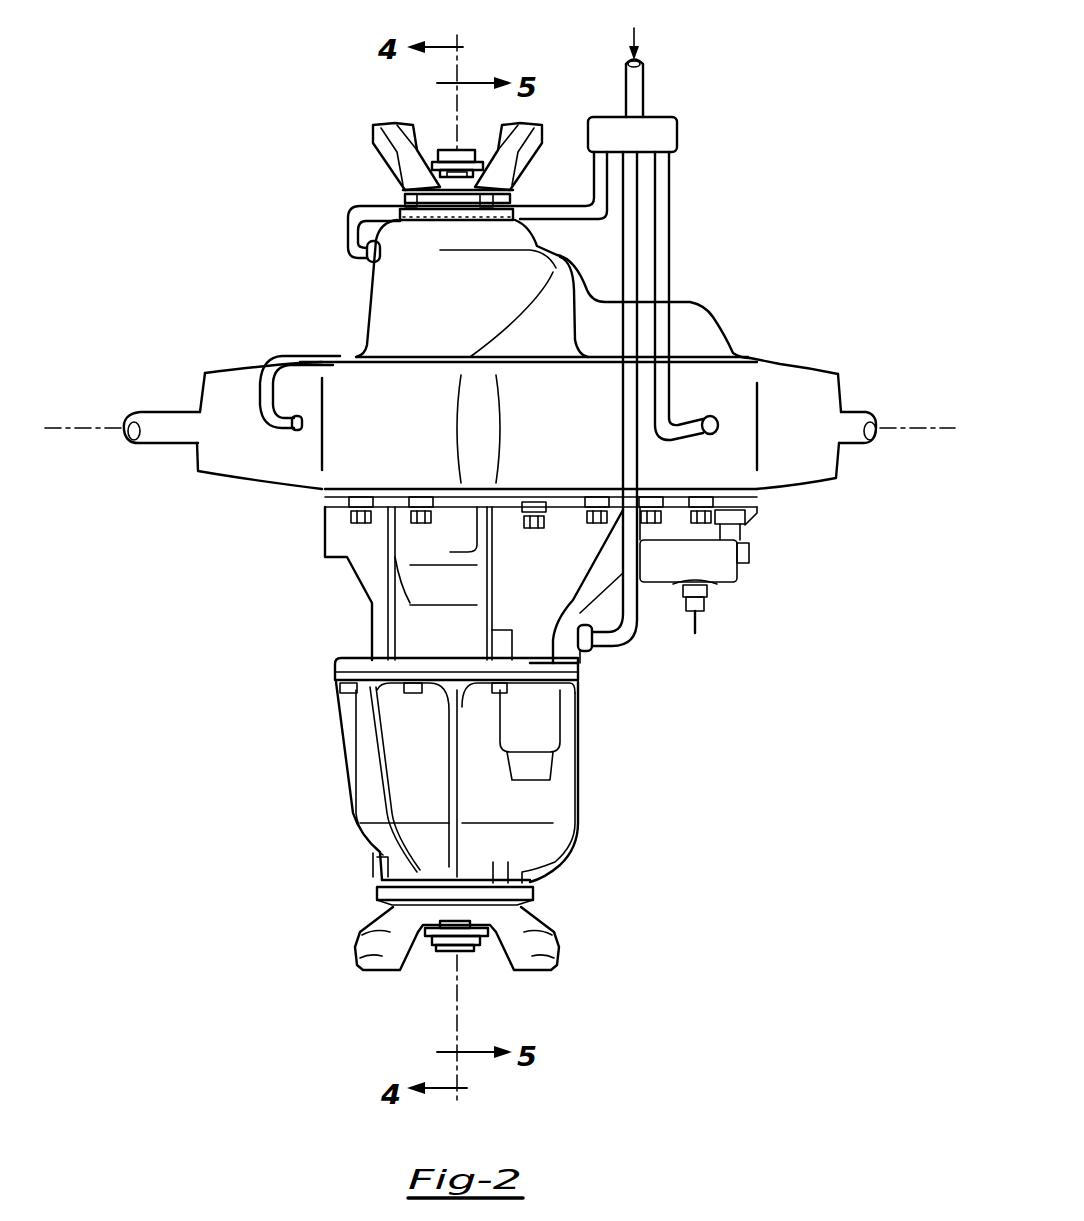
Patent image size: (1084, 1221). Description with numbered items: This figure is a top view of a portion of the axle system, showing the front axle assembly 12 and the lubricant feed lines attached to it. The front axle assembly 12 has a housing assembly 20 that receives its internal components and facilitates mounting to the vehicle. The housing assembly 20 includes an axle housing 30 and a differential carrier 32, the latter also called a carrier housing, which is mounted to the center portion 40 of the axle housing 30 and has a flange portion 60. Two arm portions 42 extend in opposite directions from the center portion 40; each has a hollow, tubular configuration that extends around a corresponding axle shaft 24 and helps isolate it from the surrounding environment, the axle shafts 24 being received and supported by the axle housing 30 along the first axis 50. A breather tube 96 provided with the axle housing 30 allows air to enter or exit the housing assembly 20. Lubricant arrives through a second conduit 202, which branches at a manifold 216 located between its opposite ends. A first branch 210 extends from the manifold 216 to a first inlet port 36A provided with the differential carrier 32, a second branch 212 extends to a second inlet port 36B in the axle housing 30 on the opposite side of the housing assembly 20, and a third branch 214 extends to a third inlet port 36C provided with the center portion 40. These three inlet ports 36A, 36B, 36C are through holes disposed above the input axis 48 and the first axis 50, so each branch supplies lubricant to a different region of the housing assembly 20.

The front axle assembly 12 is at (203, 255).
The housing assembly 20 is at (243, 355).
The axle shaft 24 is at (163, 412).
The axle housing 30 is at (723, 323).
The differential carrier 32 is at (335, 673).
The first inlet port 36A is at (592, 655).
The second inlet port 36B is at (366, 262).
The third inlet port 36C is at (715, 420).
The center portion 40 is at (353, 354).
The arm portion 42 is at (212, 370).
The input axis 48 is at (452, 997).
The first axis 50 is at (65, 428).
The flange portion 60 is at (757, 512).
The breather tube 96 is at (283, 355).
The second conduit 202 is at (645, 78).
The first branch 210 is at (638, 628).
The second branch 212 is at (350, 224).
The third branch 214 is at (670, 177).
The manifold 216 is at (650, 147).